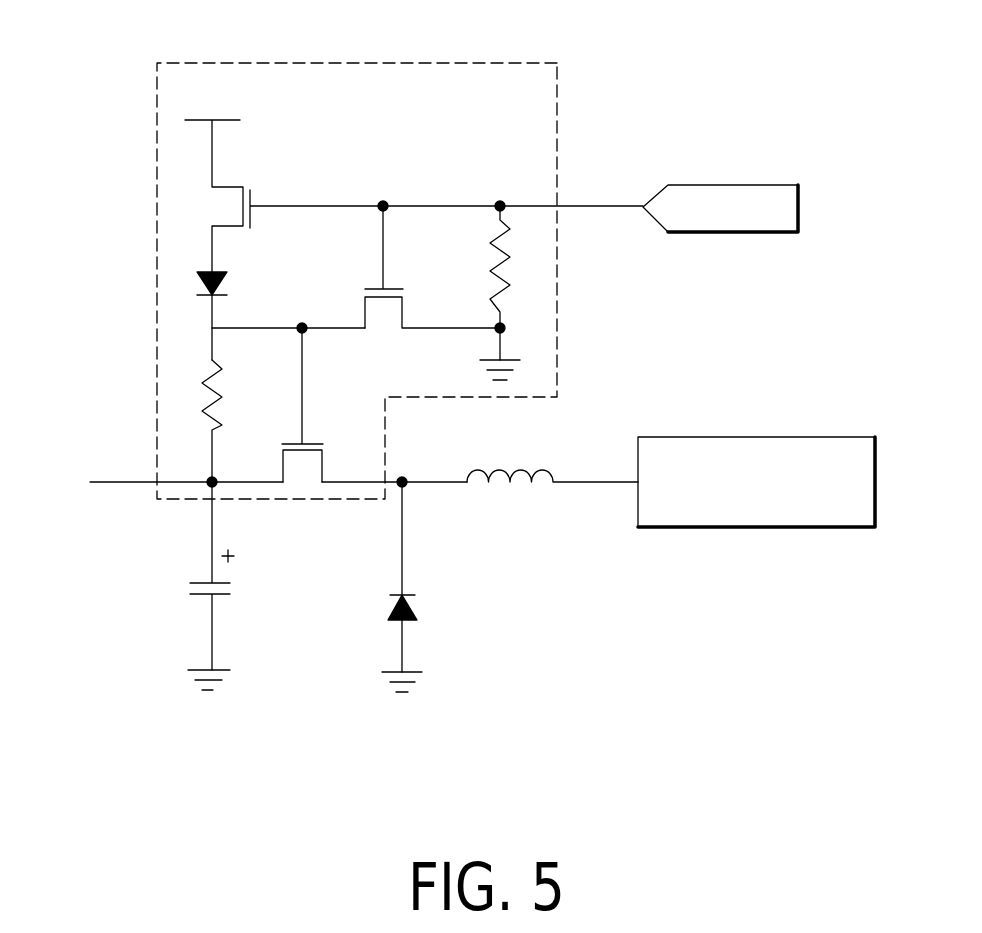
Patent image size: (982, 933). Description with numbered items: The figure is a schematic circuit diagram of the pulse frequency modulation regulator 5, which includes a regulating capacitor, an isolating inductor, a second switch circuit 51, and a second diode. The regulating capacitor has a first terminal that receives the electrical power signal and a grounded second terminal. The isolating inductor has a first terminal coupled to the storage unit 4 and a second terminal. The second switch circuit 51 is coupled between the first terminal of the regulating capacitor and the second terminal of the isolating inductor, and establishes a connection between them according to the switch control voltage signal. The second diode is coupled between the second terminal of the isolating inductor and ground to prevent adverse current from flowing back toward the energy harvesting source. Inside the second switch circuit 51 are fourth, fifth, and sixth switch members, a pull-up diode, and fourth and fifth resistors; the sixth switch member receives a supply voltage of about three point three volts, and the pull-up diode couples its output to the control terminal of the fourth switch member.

The pulse frequency modulation regulator 5 is at (620, 72).
The second switch circuit 51 is at (472, 63).
The storage unit 4 is at (723, 437).